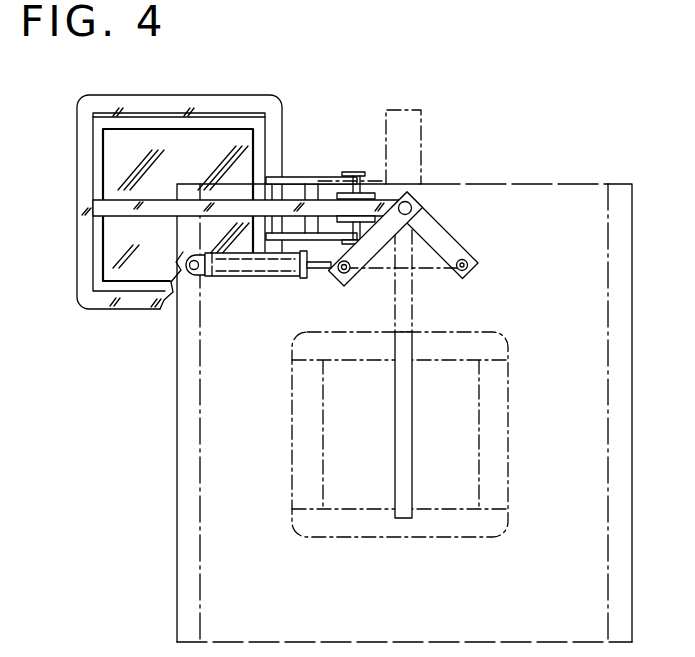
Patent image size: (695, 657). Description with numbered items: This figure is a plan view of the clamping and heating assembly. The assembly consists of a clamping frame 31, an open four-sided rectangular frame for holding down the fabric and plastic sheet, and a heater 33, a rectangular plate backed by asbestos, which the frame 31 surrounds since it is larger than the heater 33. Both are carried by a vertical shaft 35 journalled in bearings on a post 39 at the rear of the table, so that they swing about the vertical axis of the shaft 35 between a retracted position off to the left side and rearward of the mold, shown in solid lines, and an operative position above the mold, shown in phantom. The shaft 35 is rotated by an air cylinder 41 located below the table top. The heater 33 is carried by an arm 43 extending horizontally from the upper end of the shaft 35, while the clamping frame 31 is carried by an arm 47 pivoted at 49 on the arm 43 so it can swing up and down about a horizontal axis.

The clamping frame 31 is at (77, 221).
The heater 33 is at (103, 258).
The vertical shaft 35 is at (420, 200).
The post 39 is at (422, 122).
The air cylinder 41 is at (240, 277).
The arm 43 is at (157, 216).
The arm 47 is at (293, 177).
The pivot 49 is at (355, 172).